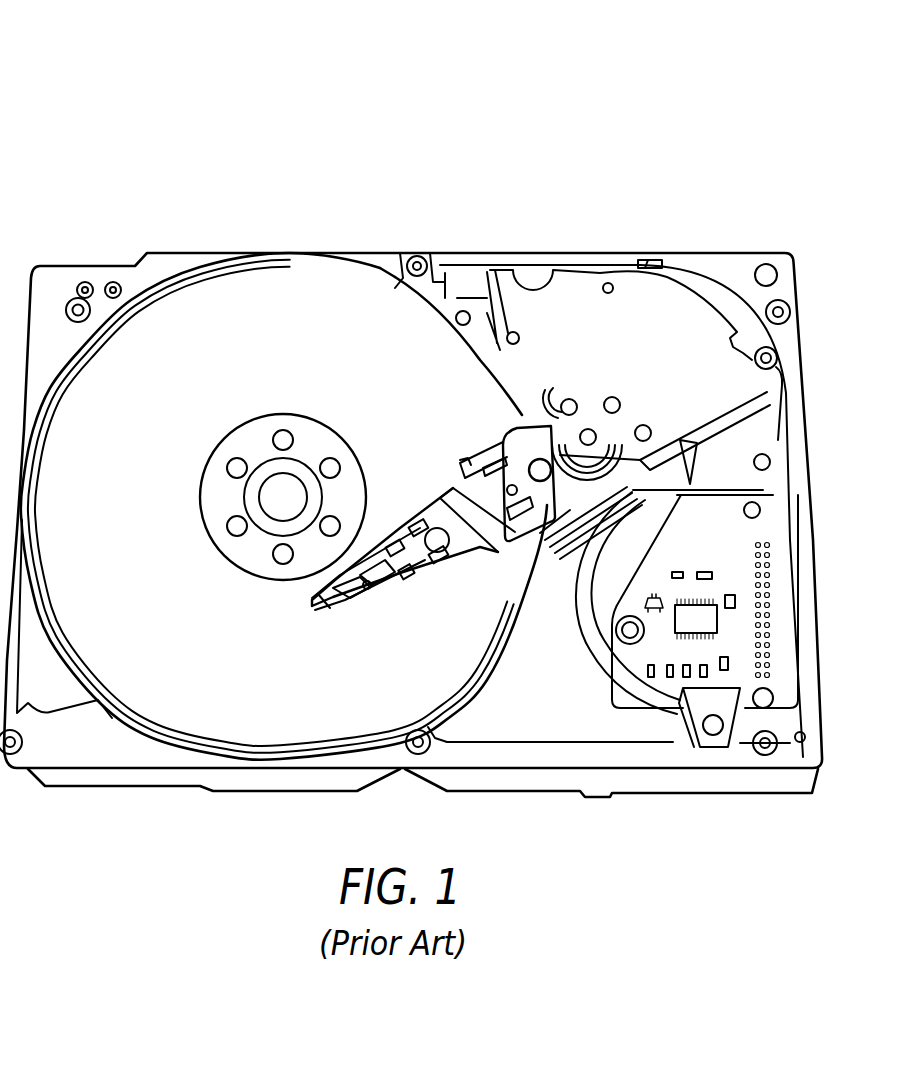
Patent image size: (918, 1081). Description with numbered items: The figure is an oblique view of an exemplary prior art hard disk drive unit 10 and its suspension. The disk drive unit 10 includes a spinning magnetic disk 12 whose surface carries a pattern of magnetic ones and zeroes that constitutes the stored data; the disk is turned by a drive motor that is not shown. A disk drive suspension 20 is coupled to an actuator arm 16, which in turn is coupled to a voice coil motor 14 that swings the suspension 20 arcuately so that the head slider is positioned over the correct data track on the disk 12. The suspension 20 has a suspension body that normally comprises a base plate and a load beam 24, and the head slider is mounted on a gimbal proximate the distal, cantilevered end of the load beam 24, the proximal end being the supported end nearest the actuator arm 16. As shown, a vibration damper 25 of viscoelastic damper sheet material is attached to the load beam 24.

The disk drive unit 10 is at (292, 204).
The magnetic disk 12 is at (233, 315).
The voice coil motor 14 is at (627, 357).
The actuator arm 16 is at (559, 503).
The disk drive suspension 20 is at (357, 618).
The load beam 24 is at (403, 538).
The vibration damper 25 is at (472, 547).